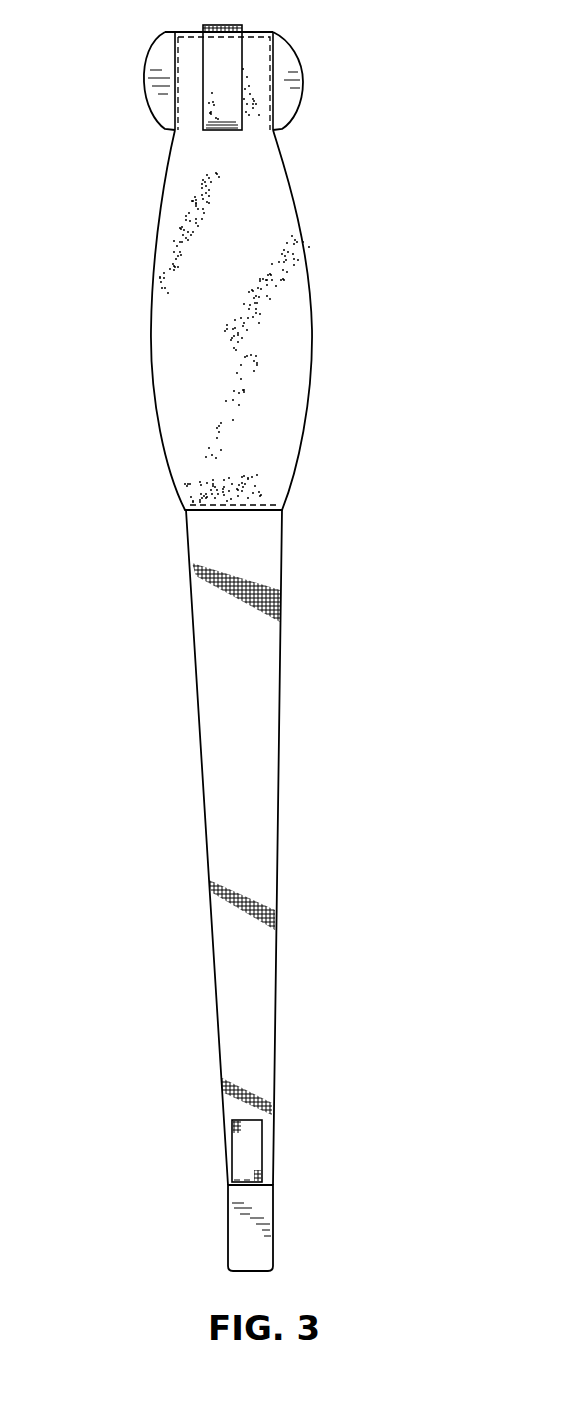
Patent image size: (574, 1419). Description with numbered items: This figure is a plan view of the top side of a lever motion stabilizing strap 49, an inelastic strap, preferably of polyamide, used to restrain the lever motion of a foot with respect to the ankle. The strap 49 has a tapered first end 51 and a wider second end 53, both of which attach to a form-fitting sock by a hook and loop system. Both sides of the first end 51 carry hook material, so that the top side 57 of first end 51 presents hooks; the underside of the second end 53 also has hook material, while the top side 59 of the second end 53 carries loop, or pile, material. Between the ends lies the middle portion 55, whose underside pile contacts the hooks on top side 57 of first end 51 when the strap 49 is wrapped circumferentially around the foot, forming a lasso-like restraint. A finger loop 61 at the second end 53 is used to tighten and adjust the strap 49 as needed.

The lever motion stabilizing strap 49 is at (343, 675).
The tapered first end 51 is at (343, 1205).
The wider second end 53 is at (357, 98).
The middle portion 55 is at (210, 738).
The top side of first end 57 is at (265, 1197).
The top side of second end 59 is at (270, 218).
The finger loop 61 is at (215, 62).